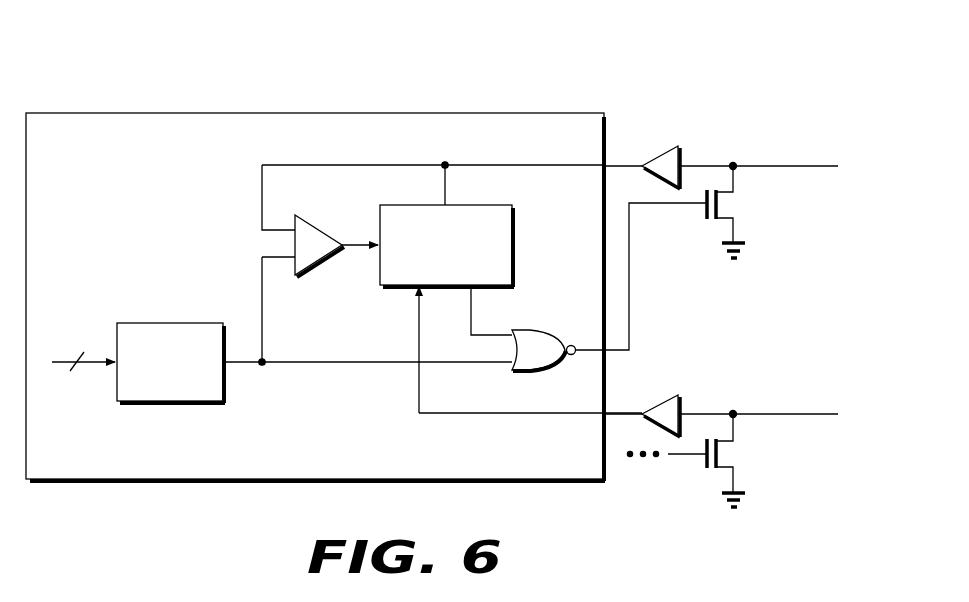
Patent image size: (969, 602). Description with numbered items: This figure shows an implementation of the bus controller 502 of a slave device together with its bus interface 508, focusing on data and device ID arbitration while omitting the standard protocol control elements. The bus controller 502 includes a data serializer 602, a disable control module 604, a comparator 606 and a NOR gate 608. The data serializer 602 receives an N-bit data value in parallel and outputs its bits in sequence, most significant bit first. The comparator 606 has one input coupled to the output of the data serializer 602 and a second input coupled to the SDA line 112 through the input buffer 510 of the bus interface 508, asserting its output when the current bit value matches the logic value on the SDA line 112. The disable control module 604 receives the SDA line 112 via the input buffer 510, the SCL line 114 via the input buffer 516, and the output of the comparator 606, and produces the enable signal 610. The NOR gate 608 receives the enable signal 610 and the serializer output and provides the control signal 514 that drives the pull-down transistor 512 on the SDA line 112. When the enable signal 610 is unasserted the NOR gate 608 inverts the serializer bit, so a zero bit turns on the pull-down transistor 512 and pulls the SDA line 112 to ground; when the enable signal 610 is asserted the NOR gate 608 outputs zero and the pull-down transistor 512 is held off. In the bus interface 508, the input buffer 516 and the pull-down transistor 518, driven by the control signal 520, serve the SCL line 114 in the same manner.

The bus controller 502 is at (534, 112).
The data serializer 602 is at (194, 322).
The disable control module 604 is at (513, 222).
The comparator 606 is at (310, 222).
The NOR gate 608 is at (538, 330).
The enable (EN) signal 610 is at (471, 304).
The bus interface 508 is at (702, 131).
The input buffer 510 is at (669, 147).
The pull-down transistor 512 is at (721, 200).
The control signal 514 is at (655, 208).
The input buffer 516 is at (669, 396).
The pull-down transistor 518 is at (721, 449).
The control signal 520 is at (689, 458).
The SDA line 112 is at (821, 169).
The SCL line 114 is at (821, 417).